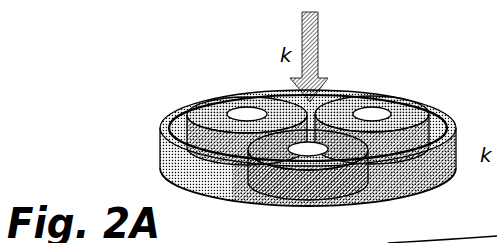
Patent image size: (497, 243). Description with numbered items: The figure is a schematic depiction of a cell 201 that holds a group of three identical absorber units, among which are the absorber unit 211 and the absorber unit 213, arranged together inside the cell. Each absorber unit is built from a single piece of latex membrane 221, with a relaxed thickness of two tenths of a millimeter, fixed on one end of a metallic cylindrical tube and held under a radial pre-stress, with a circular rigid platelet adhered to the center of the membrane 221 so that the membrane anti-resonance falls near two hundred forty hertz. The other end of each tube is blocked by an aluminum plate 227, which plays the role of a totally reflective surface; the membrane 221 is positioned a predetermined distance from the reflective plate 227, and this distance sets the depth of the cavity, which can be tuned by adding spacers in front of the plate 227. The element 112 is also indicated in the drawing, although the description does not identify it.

The cell 201 is at (112, 117).
The absorber unit 211 is at (273, 98).
The substrate 112 is at (343, 100).
The latex membrane 221 is at (182, 123).
The aluminum plate 227 is at (178, 162).
The absorber unit 213 is at (290, 178).